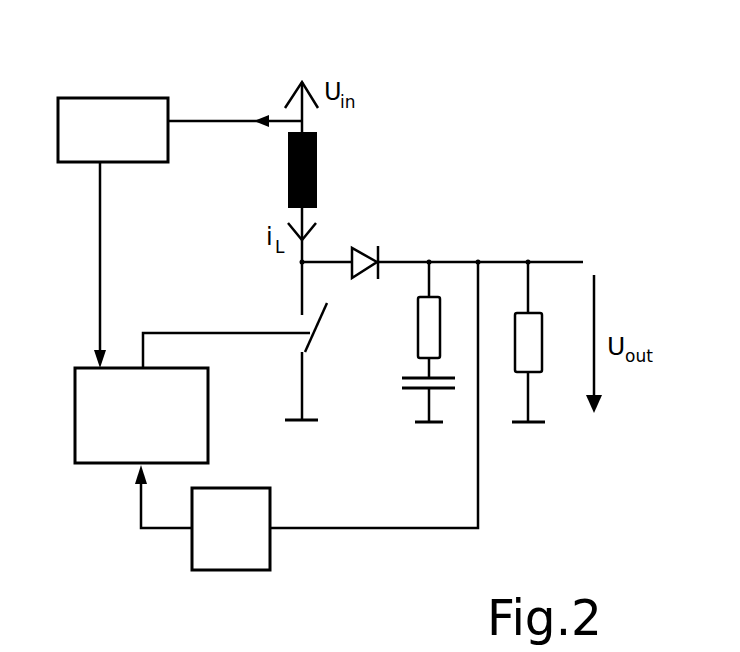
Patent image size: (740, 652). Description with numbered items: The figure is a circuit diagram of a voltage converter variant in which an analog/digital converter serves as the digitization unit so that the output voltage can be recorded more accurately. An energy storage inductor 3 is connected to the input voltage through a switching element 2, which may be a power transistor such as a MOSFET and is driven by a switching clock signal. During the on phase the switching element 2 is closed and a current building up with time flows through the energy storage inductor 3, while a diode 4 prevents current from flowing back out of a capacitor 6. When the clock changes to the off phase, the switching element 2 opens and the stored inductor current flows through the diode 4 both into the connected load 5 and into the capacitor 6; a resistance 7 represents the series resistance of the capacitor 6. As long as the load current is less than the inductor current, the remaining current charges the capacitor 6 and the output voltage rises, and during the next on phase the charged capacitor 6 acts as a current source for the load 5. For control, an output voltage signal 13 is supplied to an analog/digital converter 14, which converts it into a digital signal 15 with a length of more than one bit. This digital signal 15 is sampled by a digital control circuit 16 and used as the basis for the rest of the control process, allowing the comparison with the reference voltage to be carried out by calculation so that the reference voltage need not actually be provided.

The switching element 2 is at (310, 350).
The energy storage inductor 3 is at (317, 170).
The diode 4 is at (378, 248).
The load 5 is at (542, 345).
The capacitor 6 is at (413, 390).
The resistance 7 is at (418, 325).
The output voltage signal 13 is at (433, 530).
The analog/digital converter 14 is at (237, 572).
The digital signal 15 is at (178, 533).
The digital control circuit 16 is at (141, 415).